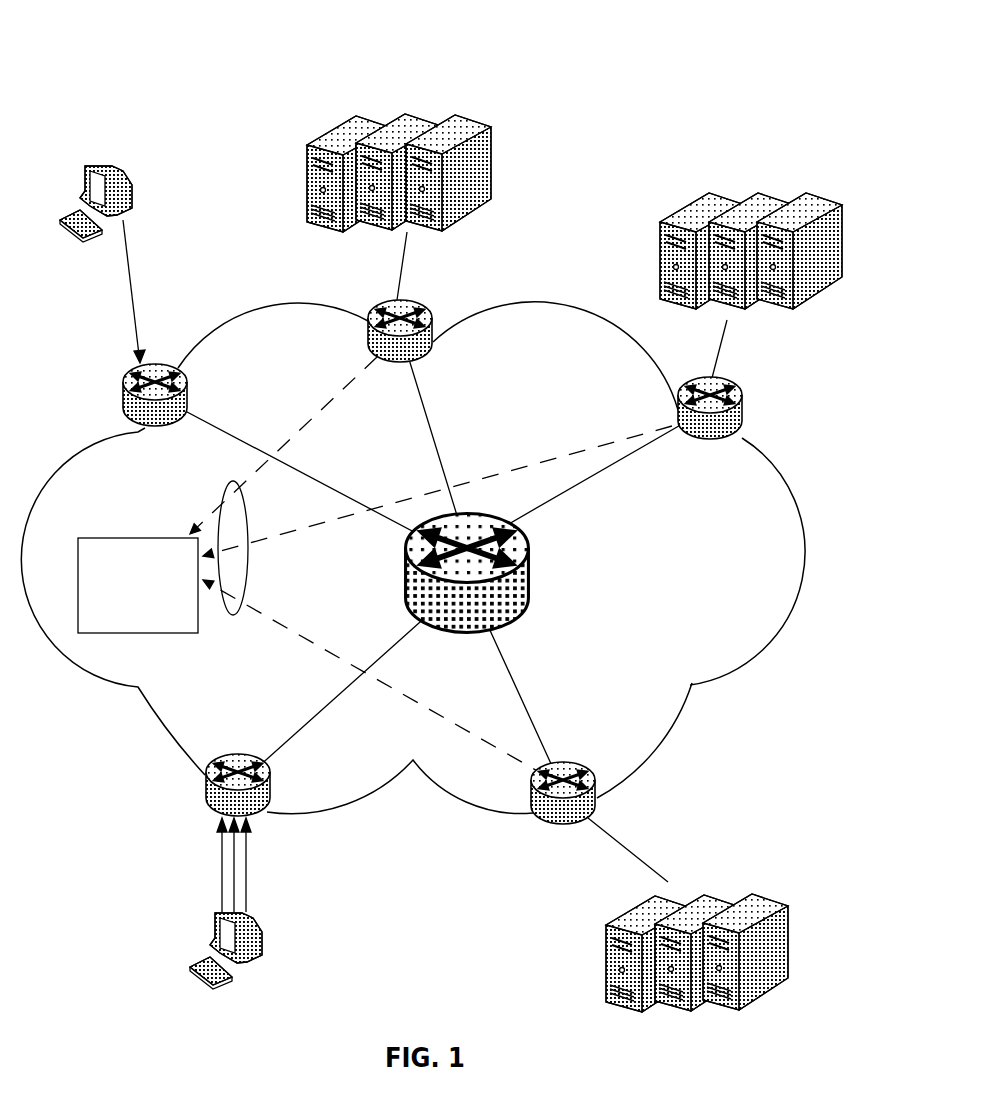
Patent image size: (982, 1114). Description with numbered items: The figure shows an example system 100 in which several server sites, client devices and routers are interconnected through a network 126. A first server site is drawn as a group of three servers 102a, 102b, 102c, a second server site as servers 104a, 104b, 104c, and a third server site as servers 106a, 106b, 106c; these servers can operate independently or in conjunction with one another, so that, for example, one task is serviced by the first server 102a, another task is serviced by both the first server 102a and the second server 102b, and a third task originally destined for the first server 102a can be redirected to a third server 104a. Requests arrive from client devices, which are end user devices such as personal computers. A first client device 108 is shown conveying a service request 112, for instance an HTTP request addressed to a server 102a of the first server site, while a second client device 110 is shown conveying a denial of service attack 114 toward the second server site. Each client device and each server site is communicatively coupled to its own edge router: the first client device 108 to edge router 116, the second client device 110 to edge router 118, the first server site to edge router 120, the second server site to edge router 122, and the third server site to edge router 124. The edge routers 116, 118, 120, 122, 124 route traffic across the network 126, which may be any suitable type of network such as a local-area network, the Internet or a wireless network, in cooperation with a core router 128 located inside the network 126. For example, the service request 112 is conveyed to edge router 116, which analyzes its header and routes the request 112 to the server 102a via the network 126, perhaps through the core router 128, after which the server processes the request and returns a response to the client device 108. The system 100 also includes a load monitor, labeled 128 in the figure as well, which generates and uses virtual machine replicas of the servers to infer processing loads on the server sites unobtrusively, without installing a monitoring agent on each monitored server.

The system 100 is at (136, 44).
The first server 102a is at (334, 128).
The second server 102b is at (392, 116).
The server 102c is at (458, 116).
The third server 104a is at (680, 208).
The server 104b is at (745, 197).
The server 104c is at (810, 195).
The server 106a is at (622, 1017).
The server 106b is at (676, 1018).
The server 106c is at (740, 1017).
The first client device 108 is at (95, 170).
The second client device 110 is at (212, 944).
The service request 112 is at (133, 296).
The denial of service (DoS) attack 114 is at (209, 878).
The edge router 116 is at (122, 392).
The edge router 118 is at (209, 801).
The edge router 120 is at (428, 312).
The edge router 122 is at (742, 393).
The edge router 124 is at (548, 828).
The network 126 is at (720, 690).
The core router / load monitor 128 is at (528, 569).